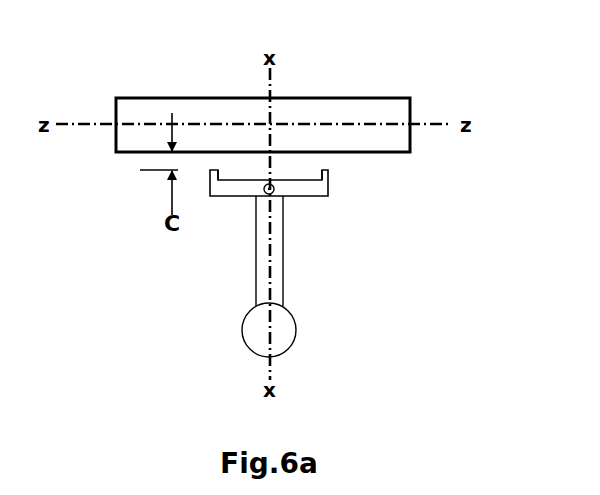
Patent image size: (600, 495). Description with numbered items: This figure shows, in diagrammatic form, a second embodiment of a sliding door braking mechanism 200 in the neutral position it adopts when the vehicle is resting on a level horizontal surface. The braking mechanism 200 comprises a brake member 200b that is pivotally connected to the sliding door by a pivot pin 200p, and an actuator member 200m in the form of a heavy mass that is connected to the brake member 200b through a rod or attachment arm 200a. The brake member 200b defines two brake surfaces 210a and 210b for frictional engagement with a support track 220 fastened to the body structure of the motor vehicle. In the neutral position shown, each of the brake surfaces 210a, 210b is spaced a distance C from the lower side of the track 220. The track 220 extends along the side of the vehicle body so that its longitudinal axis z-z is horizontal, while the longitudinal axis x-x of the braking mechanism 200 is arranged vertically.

The support track 220 is at (165, 97).
The brake surface 210a is at (218, 171).
The brake surface 210b is at (325, 171).
The brake member 200b is at (328, 192).
The pivot pin 200p is at (359, 210).
The attachment arm 200a is at (283, 254).
The actuator member 200m is at (243, 328).
The sliding door braking mechanism 200 is at (255, 253).